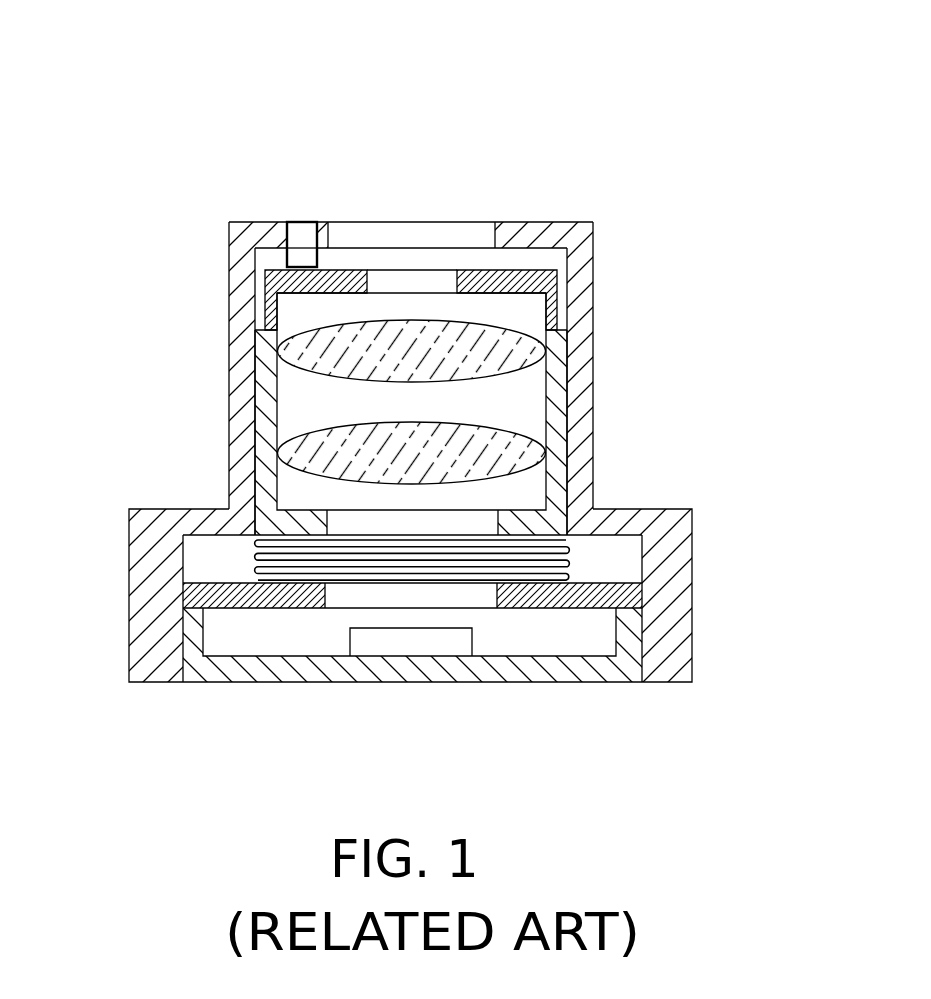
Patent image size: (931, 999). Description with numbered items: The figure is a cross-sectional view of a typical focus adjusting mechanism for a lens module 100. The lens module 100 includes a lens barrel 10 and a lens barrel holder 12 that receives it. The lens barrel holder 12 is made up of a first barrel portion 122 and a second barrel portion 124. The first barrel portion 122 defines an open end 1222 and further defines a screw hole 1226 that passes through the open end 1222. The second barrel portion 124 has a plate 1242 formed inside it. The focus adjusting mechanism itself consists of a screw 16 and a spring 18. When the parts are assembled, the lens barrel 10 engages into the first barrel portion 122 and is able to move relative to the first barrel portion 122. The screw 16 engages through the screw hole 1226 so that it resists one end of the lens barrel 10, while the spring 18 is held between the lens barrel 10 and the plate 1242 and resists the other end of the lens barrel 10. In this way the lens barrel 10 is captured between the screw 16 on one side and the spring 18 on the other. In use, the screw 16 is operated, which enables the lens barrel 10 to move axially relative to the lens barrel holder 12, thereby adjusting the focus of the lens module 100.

The lens module 100 is at (428, 46).
The lens barrel 10 is at (263, 368).
The lens barrel holder 12 is at (148, 532).
The first barrel portion 122 is at (580, 332).
The open end 1222 is at (558, 222).
The screw hole 1226 is at (284, 237).
The screw 16 is at (303, 230).
The spring 18 is at (570, 558).
The second barrel portion 124 is at (665, 628).
The plate 1242 is at (628, 597).